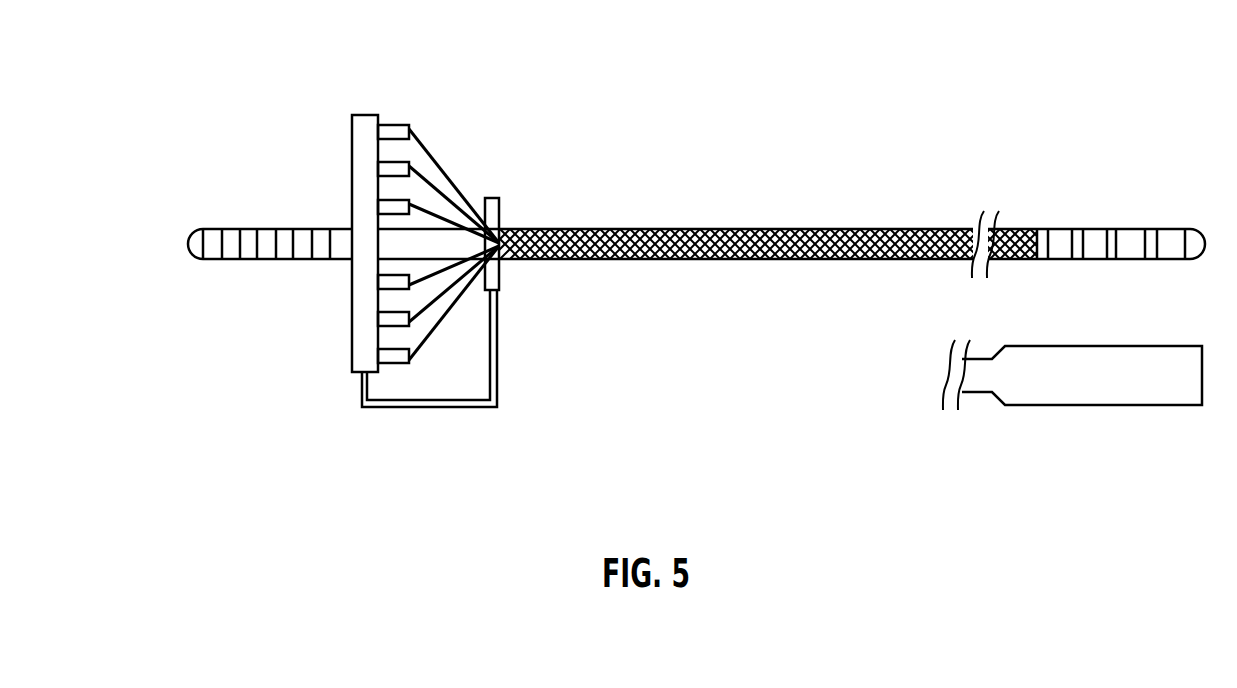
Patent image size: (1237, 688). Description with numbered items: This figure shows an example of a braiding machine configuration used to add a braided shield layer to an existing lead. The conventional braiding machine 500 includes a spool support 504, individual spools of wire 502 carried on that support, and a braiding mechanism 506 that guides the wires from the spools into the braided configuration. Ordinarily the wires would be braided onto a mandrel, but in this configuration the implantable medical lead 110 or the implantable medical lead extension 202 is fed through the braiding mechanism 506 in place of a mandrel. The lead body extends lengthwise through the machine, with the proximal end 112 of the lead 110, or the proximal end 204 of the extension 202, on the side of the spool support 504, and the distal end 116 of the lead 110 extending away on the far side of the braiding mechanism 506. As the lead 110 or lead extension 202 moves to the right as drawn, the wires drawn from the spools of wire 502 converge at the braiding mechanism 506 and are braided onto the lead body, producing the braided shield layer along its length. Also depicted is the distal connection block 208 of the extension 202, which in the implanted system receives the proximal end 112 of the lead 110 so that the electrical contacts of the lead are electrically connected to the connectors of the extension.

The braiding machine 500 is at (389, 111).
The spools of wire 502 is at (409, 127).
The spool support 504 is at (351, 114).
The braiding mechanism 506 is at (499, 197).
The proximal end 112 is at (261, 199).
The proximal end 204 is at (195, 226).
The implantable medical lead 110 is at (781, 216).
The implantable medical lead extension 202 is at (684, 222).
The distal end 116 is at (1204, 227).
The distal connection block 208 is at (1187, 345).